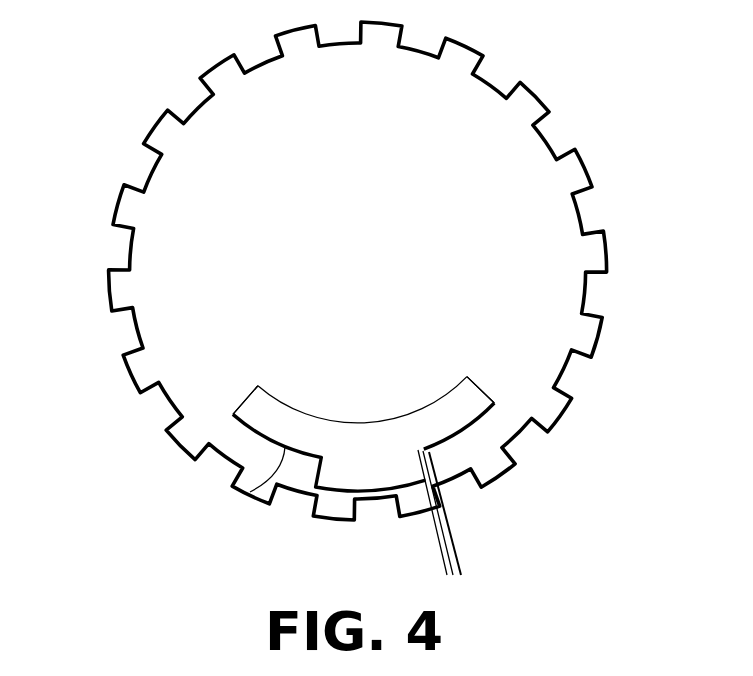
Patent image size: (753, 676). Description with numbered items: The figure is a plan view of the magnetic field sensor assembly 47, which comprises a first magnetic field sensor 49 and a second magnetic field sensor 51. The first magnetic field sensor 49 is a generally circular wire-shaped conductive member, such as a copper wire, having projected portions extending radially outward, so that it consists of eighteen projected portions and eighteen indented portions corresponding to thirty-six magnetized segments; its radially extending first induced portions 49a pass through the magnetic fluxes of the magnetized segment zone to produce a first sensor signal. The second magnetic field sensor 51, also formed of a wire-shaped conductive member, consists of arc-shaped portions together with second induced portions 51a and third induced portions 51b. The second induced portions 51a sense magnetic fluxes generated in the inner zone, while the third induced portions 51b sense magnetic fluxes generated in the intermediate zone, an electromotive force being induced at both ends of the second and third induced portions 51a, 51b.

The magnetic field sensor assembly 47 is at (374, 267).
The first magnetic field sensor 49 is at (349, 267).
The first induced portions 49a is at (480, 70).
The second magnetic field sensor 51 is at (376, 439).
The second induced portions 51a is at (245, 400).
The third induced portions 51b is at (433, 462).